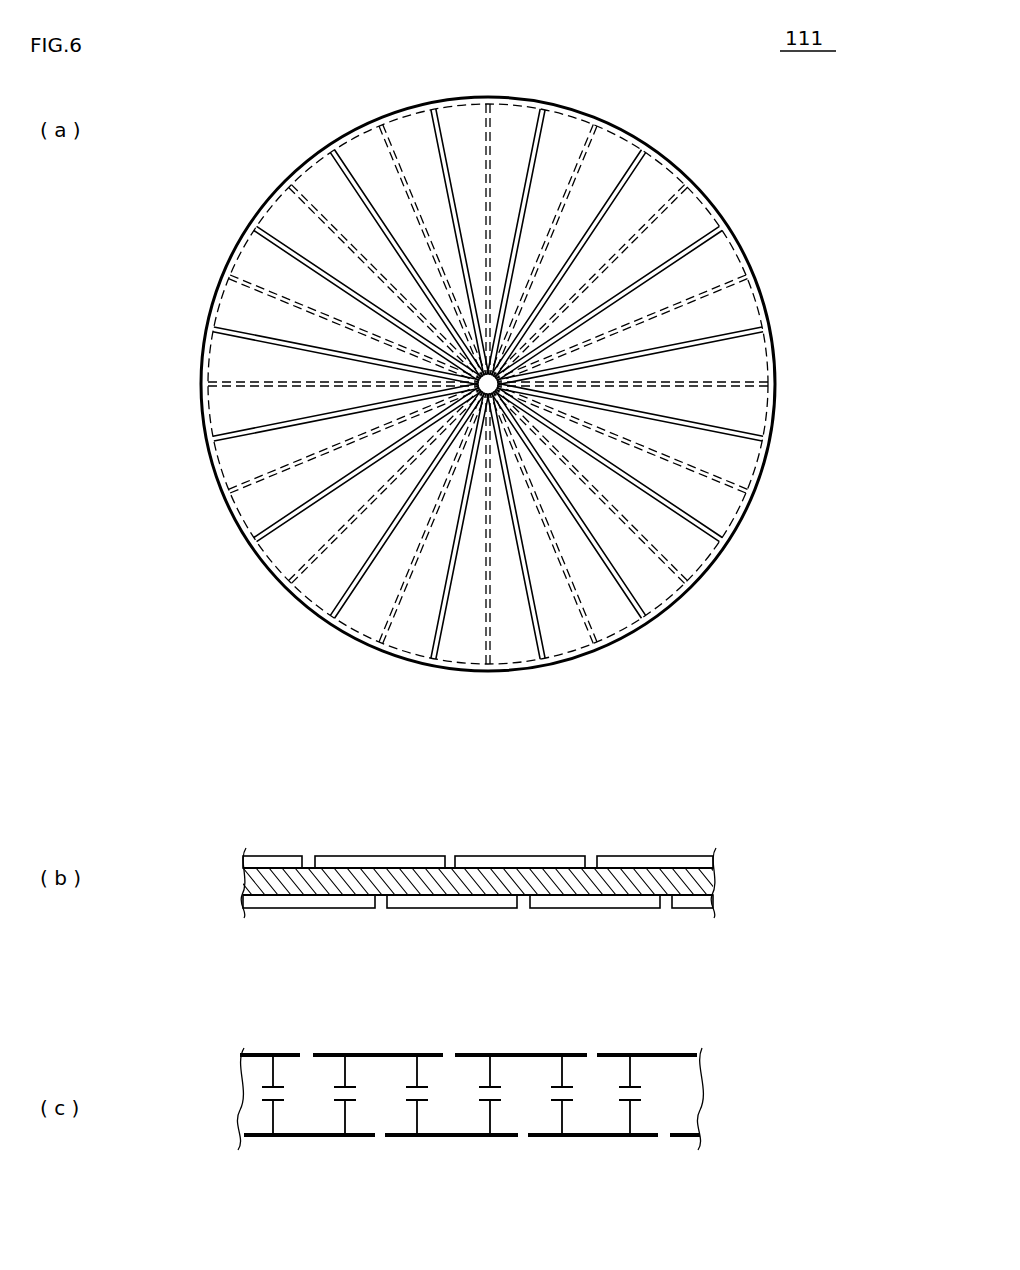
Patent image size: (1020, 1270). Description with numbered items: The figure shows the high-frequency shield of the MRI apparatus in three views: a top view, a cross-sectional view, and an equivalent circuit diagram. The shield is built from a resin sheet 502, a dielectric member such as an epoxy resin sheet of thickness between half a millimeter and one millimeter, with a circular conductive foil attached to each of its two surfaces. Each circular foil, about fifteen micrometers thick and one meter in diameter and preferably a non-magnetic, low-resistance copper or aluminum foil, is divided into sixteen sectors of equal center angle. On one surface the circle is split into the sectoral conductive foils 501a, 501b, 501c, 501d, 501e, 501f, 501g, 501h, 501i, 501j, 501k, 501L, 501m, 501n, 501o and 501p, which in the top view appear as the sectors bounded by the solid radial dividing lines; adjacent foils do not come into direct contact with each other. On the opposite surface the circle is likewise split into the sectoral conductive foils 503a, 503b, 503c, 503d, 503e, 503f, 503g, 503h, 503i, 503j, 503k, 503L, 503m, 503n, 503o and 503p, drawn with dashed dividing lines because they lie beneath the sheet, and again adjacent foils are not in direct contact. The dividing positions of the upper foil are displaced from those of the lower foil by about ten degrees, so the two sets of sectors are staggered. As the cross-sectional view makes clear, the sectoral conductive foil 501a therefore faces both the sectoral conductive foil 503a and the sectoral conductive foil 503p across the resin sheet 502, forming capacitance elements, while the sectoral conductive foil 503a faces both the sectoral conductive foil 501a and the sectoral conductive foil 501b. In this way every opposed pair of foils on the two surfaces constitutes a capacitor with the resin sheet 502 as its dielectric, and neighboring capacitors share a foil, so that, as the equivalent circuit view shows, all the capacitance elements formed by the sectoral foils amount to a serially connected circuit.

The resin sheet 502 is at (243, 213).
The sectoral conductive foil 501a is at (475, 97).
The sectoral conductive foil 501b is at (600, 115).
The sectoral conductive foil 501c is at (694, 179).
The sectoral conductive foil 501d is at (757, 273).
The sectoral conductive foil 501e is at (777, 384).
The sectoral conductive foil 501f is at (757, 495).
The sectoral conductive foil 501g is at (694, 589).
The sectoral conductive foil 501h is at (600, 653).
The sectoral conductive foil 501i is at (515, 670).
The sectoral conductive foil 501j is at (378, 653).
The sectoral conductive foil 501k is at (285, 589).
The sectoral conductive foil 501L is at (222, 495).
The sectoral conductive foil 501m is at (200, 384).
The sectoral conductive foil 501n is at (222, 273).
The sectoral conductive foil 501o is at (285, 179).
The sectoral conductive foil 501p is at (378, 115).
The sectoral conductive foil 503a is at (545, 100).
The sectoral conductive foil 503b is at (649, 142).
The sectoral conductive foil 503c is at (729, 223).
The sectoral conductive foil 503d is at (775, 398).
The sectoral conductive foil 503e is at (762, 495).
The sectoral conductive foil 503f is at (700, 583).
The sectoral conductive foil 503g is at (610, 660).
The sectoral conductive foil 503h is at (492, 668).
The sectoral conductive foil 503i is at (392, 668).
The sectoral conductive foil 503j is at (295, 585).
The sectoral conductive foil 503k is at (228, 523).
The sectoral conductive foil 503L is at (200, 412).
The sectoral conductive foil 503m is at (215, 293).
The sectoral conductive foil 503n is at (292, 190).
The sectoral conductive foil 503o is at (395, 110).
The sectoral conductive foil 503p is at (505, 97).